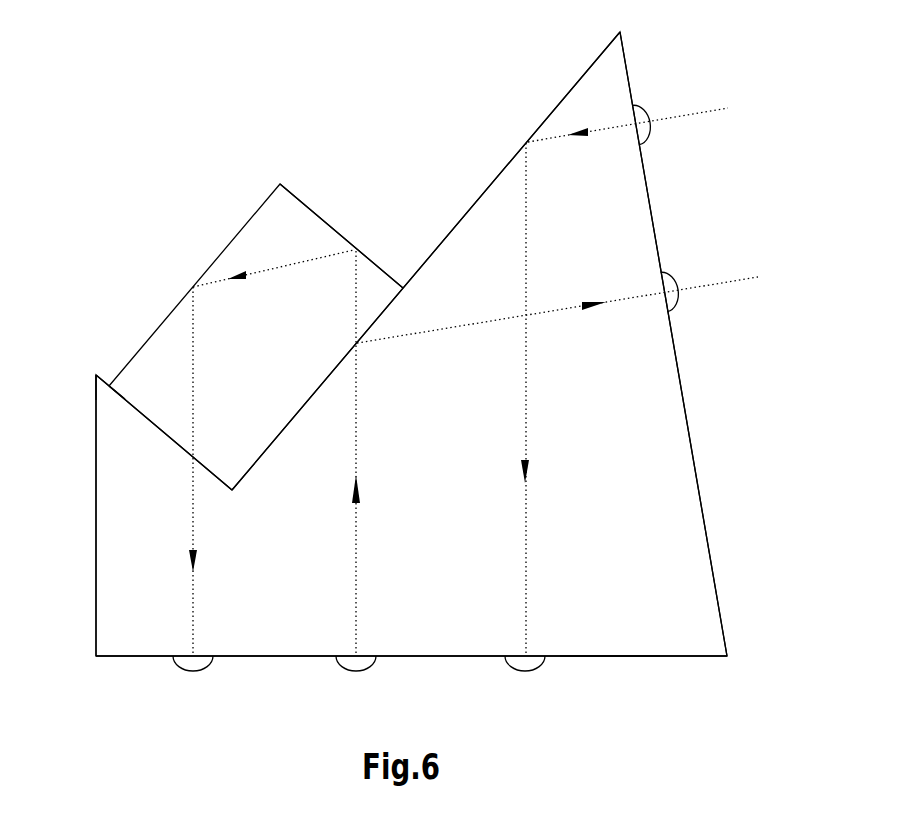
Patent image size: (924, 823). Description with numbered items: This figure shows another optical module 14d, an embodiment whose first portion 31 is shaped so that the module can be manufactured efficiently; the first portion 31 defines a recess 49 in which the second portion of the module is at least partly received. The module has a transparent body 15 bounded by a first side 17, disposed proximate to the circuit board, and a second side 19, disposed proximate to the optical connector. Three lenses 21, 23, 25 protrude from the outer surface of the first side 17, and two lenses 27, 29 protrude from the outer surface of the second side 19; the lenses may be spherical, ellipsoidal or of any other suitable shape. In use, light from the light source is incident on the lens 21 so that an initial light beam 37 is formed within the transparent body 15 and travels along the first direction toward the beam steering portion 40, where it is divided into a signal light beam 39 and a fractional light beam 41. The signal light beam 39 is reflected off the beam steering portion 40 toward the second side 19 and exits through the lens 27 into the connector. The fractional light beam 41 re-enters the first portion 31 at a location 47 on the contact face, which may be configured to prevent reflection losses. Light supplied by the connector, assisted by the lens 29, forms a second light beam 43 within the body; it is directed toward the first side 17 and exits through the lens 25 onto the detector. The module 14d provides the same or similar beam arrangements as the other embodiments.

The optical module 14d is at (760, 560).
The transparent body 15 is at (663, 670).
The first side 17 is at (617, 657).
The second side 19 is at (703, 515).
The lens 21 is at (356, 670).
The lens 23 is at (193, 670).
The lens 25 is at (525, 670).
The lens 27 is at (673, 278).
The lens 29 is at (647, 110).
The first portion 31 is at (165, 357).
The initial light beam 37 is at (357, 553).
The signal light beam 39 is at (557, 310).
The beam steering portion 40 is at (390, 303).
The fractional light beam 41 is at (284, 267).
The second light beam 43 is at (603, 128).
The location 47 is at (163, 437).
The recess 49 is at (105, 377).